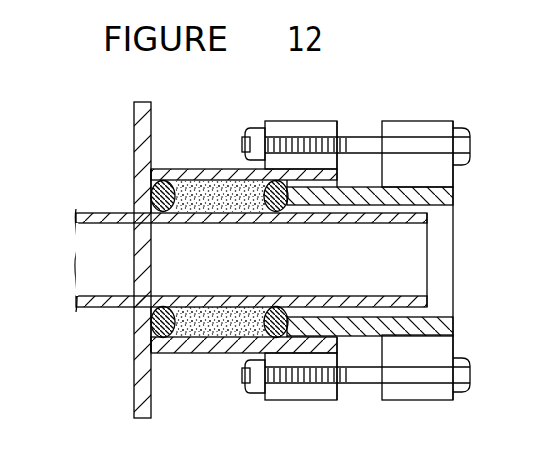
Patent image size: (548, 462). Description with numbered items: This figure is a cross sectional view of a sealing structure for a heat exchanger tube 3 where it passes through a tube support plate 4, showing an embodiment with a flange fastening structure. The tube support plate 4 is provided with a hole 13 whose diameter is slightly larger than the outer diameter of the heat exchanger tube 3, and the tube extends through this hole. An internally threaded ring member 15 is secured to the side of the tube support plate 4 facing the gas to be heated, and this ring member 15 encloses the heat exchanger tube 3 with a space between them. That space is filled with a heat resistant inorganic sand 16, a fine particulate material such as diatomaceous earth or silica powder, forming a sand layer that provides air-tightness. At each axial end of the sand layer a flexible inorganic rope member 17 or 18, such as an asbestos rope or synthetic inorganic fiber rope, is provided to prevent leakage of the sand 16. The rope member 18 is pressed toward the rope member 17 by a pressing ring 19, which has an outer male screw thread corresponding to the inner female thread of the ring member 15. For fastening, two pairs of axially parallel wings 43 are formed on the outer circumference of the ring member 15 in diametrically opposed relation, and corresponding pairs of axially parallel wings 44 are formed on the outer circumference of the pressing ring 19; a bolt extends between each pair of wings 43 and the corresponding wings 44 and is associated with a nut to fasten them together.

The heat exchanger tube 3 is at (93, 307).
The tube support plate 4 is at (140, 378).
The hole 13 is at (150, 323).
The internally threaded ring member 15 is at (197, 343).
The heat resistant inorganic sand 16 is at (213, 321).
The flexible inorganic rope member 17 is at (157, 340).
The flexible inorganic rope member 18 is at (284, 339).
The pressing ring 19 is at (356, 350).
The axially parallel wings 43 is at (290, 133).
The axially parallel wings 44 is at (400, 131).